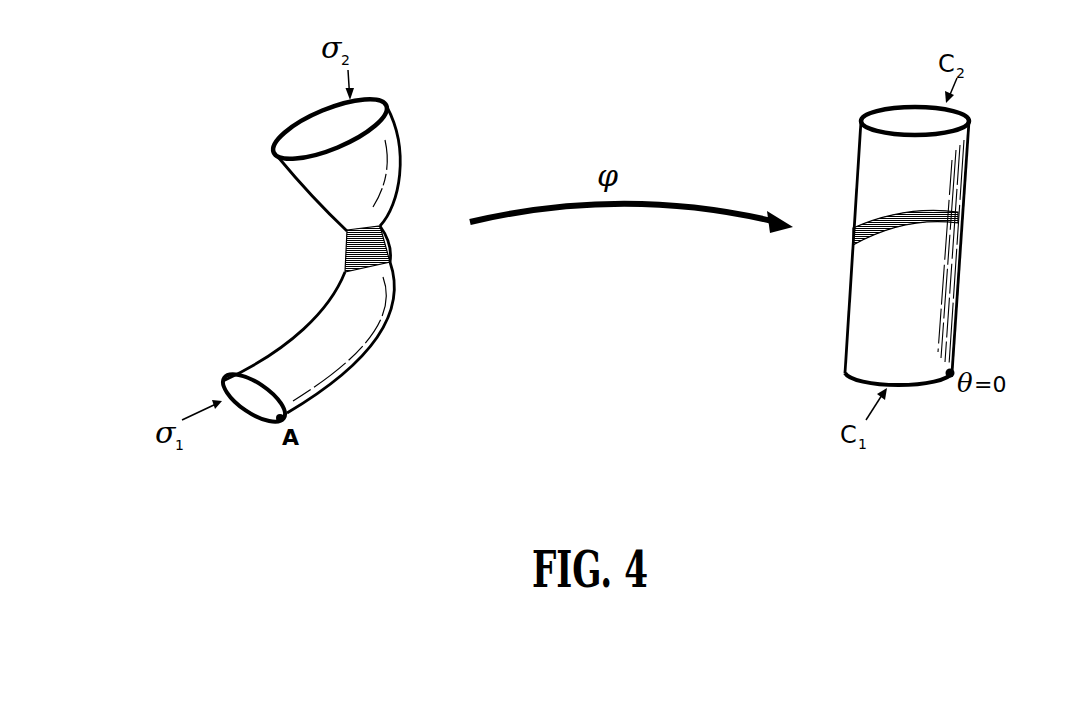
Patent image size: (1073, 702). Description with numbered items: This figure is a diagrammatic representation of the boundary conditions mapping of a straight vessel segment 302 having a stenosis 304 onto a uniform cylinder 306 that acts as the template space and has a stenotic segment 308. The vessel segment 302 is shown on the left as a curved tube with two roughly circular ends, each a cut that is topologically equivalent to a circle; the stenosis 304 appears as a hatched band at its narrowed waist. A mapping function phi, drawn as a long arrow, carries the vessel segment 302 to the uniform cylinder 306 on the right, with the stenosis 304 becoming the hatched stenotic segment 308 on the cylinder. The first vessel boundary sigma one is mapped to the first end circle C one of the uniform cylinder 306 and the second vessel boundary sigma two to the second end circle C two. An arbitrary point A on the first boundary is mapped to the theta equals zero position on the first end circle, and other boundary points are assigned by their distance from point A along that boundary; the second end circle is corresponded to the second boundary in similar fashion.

The straight vessel segment 302 is at (325, 323).
The stenosis 304 is at (345, 250).
The uniform cylinder 306 is at (930, 320).
The stenotic segment 308 is at (933, 223).